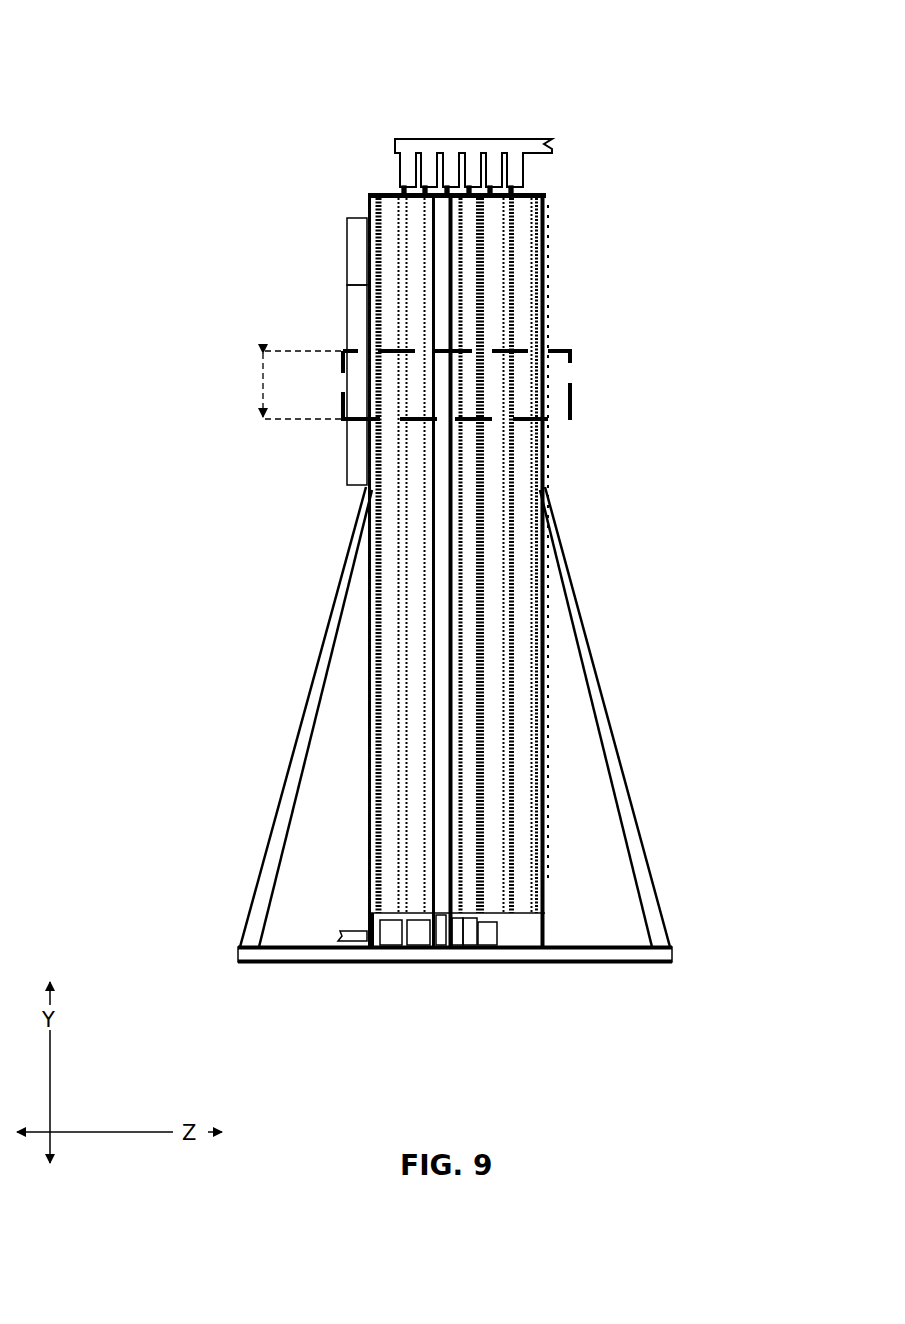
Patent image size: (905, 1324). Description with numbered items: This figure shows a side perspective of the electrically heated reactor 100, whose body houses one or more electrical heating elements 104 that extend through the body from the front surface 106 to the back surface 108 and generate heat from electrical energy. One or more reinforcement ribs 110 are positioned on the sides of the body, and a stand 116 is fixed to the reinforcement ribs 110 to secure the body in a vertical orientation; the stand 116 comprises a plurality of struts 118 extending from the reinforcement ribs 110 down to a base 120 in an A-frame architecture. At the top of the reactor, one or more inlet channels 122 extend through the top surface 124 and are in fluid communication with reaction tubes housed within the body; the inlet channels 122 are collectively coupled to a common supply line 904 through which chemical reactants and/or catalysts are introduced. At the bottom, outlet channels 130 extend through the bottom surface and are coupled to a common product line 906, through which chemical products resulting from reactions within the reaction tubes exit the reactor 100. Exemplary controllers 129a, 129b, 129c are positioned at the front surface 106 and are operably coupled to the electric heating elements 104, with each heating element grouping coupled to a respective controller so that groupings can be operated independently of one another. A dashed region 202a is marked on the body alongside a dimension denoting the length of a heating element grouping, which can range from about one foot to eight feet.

The reactor 100 is at (303, 60).
The supply line 904 is at (465, 137).
The inlet channel 122 is at (400, 190).
The top surface 124 is at (520, 190).
The electrical heating element 104 is at (550, 243).
The front surface 106 is at (366, 205).
The back surface 108 is at (546, 200).
The reinforcement rib 110 is at (508, 292).
The controller 129a is at (355, 240).
The controller 129b is at (350, 305).
The controller 129c is at (355, 355).
The section region 202a is at (585, 352).
The stand 116 is at (765, 885).
The strut 118 is at (652, 912).
The base 120 is at (652, 955).
The product line 906 is at (420, 942).
The outlet channel 130 is at (468, 918).